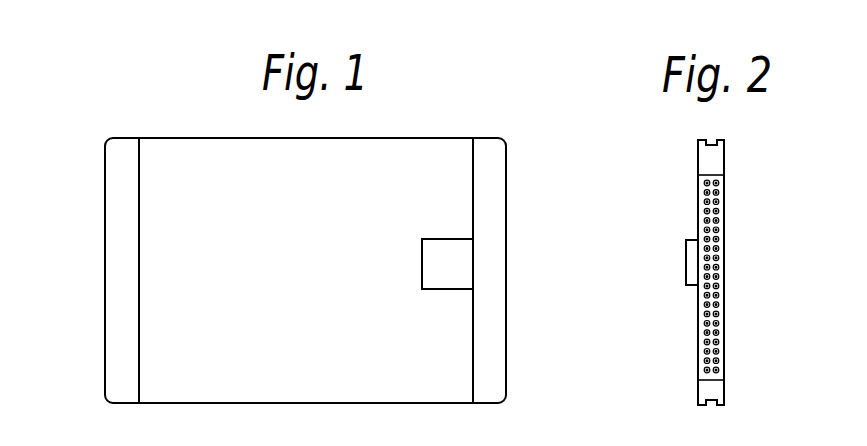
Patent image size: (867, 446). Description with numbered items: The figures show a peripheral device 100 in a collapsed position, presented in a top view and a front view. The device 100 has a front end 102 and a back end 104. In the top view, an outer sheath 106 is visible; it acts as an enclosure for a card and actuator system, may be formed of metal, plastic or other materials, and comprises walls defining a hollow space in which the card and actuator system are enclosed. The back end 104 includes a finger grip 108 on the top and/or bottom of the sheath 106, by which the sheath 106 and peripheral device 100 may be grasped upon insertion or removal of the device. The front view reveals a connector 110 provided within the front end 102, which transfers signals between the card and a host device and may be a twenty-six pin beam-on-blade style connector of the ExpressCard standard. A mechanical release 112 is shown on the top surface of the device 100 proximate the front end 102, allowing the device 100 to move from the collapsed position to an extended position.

In FIG. 1, the peripheral device 100 is at (114, 107).
In FIG. 2, the peripheral device 100 is at (677, 172).
In FIG. 1, the front end 102 is at (506, 203).
In FIG. 1, the back end 104 is at (105, 178).
In FIG. 1, the outer sheath 106 is at (214, 360).
In FIG. 1, the finger grip 108 is at (117, 321).
In FIG. 2, the connector 110 is at (725, 213).
In FIG. 1, the mechanical release 112 is at (422, 252).
In FIG. 2, the mechanical release 112 is at (686, 260).